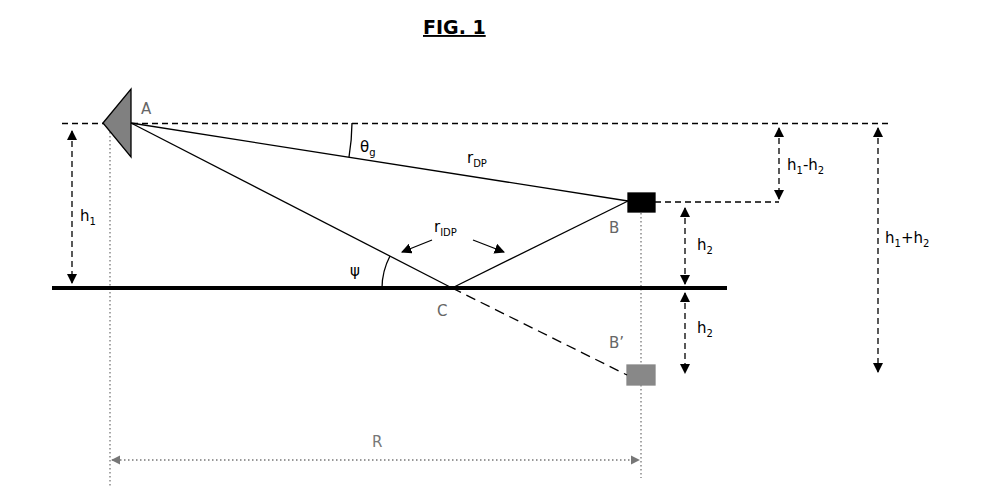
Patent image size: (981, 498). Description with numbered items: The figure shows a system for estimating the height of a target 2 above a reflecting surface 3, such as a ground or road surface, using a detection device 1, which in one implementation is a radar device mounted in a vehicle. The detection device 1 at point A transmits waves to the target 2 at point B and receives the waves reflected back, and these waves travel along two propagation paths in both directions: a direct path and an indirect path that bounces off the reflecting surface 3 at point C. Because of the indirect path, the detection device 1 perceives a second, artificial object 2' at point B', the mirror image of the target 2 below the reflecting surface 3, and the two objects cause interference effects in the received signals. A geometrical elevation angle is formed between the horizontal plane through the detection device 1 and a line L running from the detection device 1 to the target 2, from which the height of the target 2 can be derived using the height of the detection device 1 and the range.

The detection device 1 is at (122, 96).
The target 2 is at (628, 178).
The artificial object 2' is at (656, 403).
The reflecting surface 3 is at (62, 286).
The line L is at (305, 150).